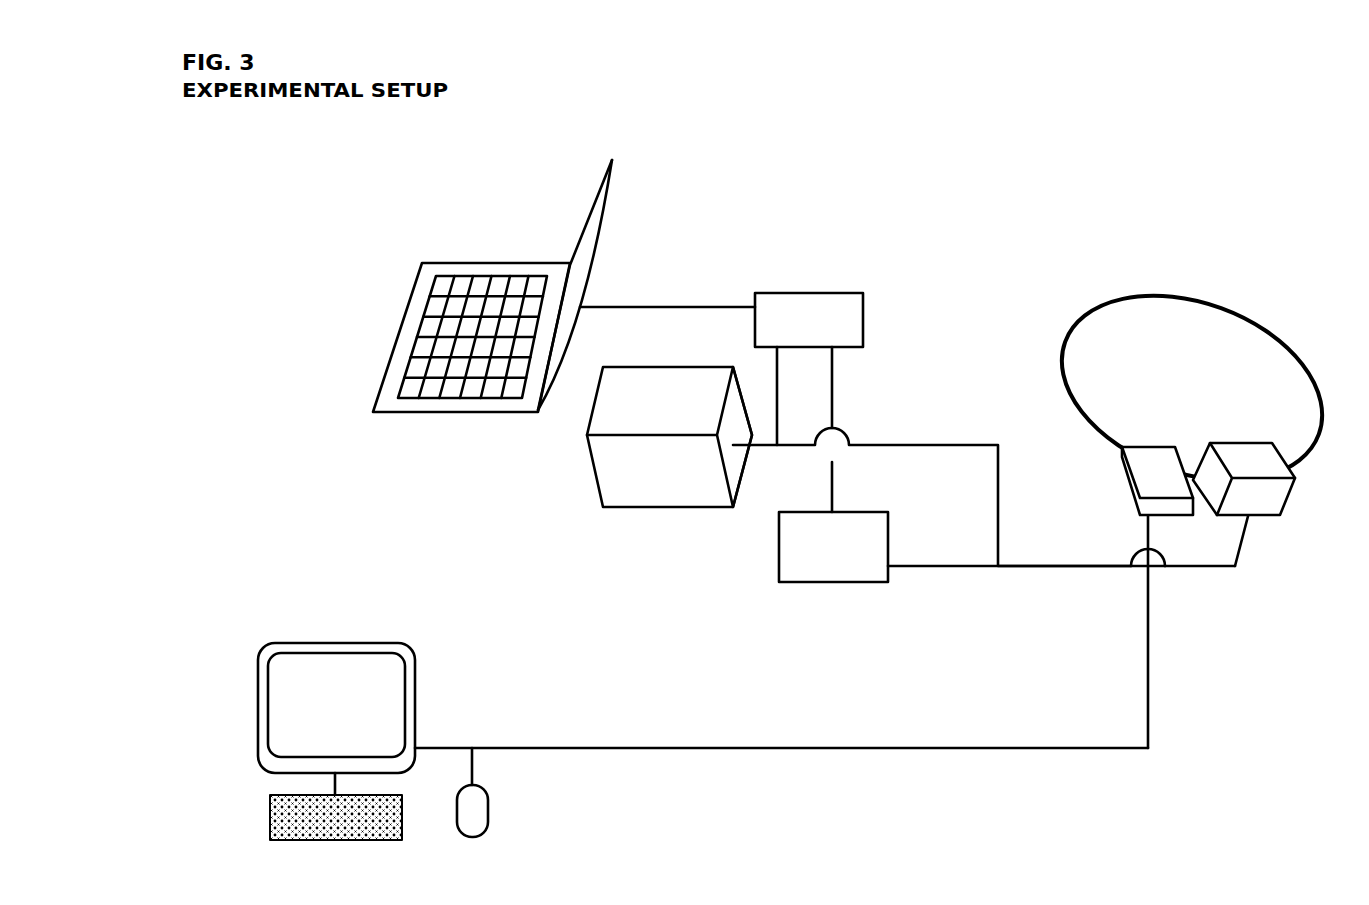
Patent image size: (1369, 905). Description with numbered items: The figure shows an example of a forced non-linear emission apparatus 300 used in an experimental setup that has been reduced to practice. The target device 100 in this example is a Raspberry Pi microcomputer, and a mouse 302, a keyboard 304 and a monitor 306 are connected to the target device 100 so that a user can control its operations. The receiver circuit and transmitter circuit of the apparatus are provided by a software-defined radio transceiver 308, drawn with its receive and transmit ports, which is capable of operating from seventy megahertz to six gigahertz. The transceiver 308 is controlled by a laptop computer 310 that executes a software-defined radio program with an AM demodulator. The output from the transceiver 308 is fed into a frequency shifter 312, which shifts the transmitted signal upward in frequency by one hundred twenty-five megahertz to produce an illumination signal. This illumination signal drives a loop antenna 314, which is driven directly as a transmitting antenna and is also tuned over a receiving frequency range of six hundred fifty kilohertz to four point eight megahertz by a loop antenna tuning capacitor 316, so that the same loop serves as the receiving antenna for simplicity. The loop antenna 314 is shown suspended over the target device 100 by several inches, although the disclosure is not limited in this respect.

The forced non-linear emission apparatus 300 is at (1100, 132).
The mouse 302 is at (455, 812).
The keyboard 304 is at (270, 813).
The monitor 306 is at (275, 643).
The software-defined radio transceiver 308 is at (775, 293).
The laptop computer 310 is at (467, 263).
The frequency shifter 312 is at (775, 567).
The loop antenna 314 is at (1143, 295).
The loop antenna tuning capacitor 316 is at (595, 485).
The target device 100 is at (1126, 470).